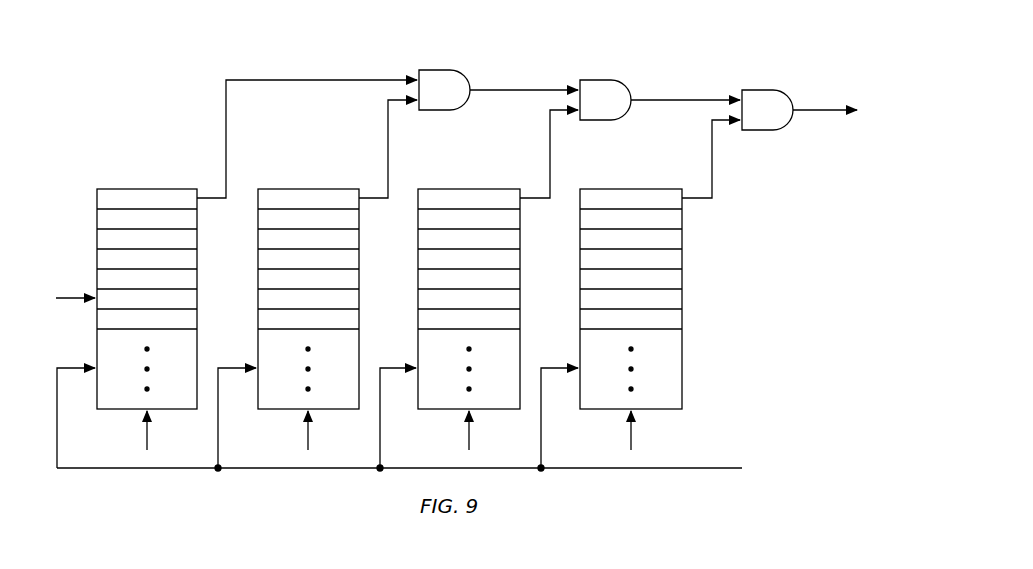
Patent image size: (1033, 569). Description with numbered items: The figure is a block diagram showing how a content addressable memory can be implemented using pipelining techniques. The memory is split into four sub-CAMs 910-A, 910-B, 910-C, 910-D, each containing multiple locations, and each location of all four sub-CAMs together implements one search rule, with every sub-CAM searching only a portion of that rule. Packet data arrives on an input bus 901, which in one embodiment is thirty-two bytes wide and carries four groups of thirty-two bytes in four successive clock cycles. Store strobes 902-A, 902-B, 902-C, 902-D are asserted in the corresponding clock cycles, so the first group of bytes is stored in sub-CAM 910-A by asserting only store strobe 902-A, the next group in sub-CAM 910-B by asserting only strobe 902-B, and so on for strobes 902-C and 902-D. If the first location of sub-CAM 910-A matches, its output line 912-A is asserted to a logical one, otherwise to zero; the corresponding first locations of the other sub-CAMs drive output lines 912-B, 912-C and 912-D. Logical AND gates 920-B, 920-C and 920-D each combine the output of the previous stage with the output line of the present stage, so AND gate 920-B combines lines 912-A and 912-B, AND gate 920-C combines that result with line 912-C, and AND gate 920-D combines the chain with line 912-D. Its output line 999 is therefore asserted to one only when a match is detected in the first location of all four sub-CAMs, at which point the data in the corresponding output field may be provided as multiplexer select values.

The input bus 901 is at (70, 294).
The sub-CAM 910-A is at (147, 189).
The sub-CAM 910-B is at (308, 189).
The sub-CAM 910-C is at (470, 189).
The sub-CAM 910-D is at (683, 296).
The store strobe 902-A is at (145, 434).
The store strobe 902-B is at (306, 437).
The store strobe 902-C is at (468, 437).
The store strobe 902-D is at (634, 432).
The output line 912-A is at (226, 118).
The output line 912-B is at (388, 122).
The output line 912-C is at (550, 143).
The output line 912-D is at (712, 157).
The logical AND gate 920-B is at (435, 70).
The logical AND gate 920-C is at (607, 80).
The logical AND gate 920-D is at (760, 90).
The line 999 is at (822, 107).